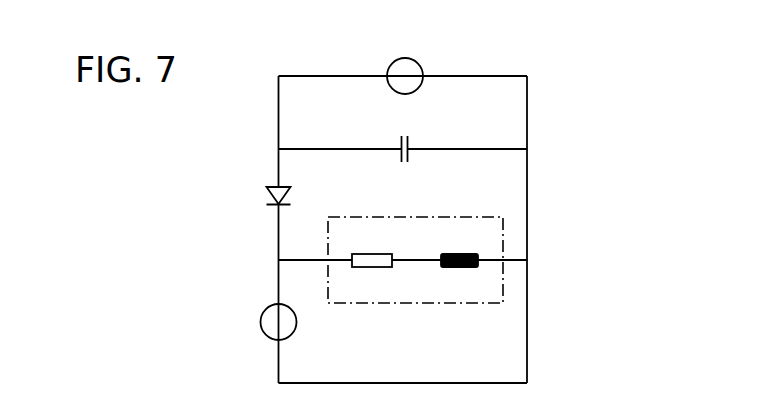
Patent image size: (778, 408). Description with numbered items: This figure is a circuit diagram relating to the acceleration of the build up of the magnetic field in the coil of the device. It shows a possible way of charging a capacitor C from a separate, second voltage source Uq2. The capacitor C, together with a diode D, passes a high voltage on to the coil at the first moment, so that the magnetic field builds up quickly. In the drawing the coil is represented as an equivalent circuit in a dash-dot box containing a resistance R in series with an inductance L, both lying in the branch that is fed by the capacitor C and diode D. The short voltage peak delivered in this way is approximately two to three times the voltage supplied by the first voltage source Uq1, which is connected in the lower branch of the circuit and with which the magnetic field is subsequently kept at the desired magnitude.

The second voltage source Uq2 is at (425, 40).
The capacitor C is at (405, 134).
The diode D is at (265, 195).
The element coil is at (415, 245).
The coil resistance R is at (372, 249).
The coil inductance L is at (459, 249).
The first voltage source Uq1 is at (240, 304).